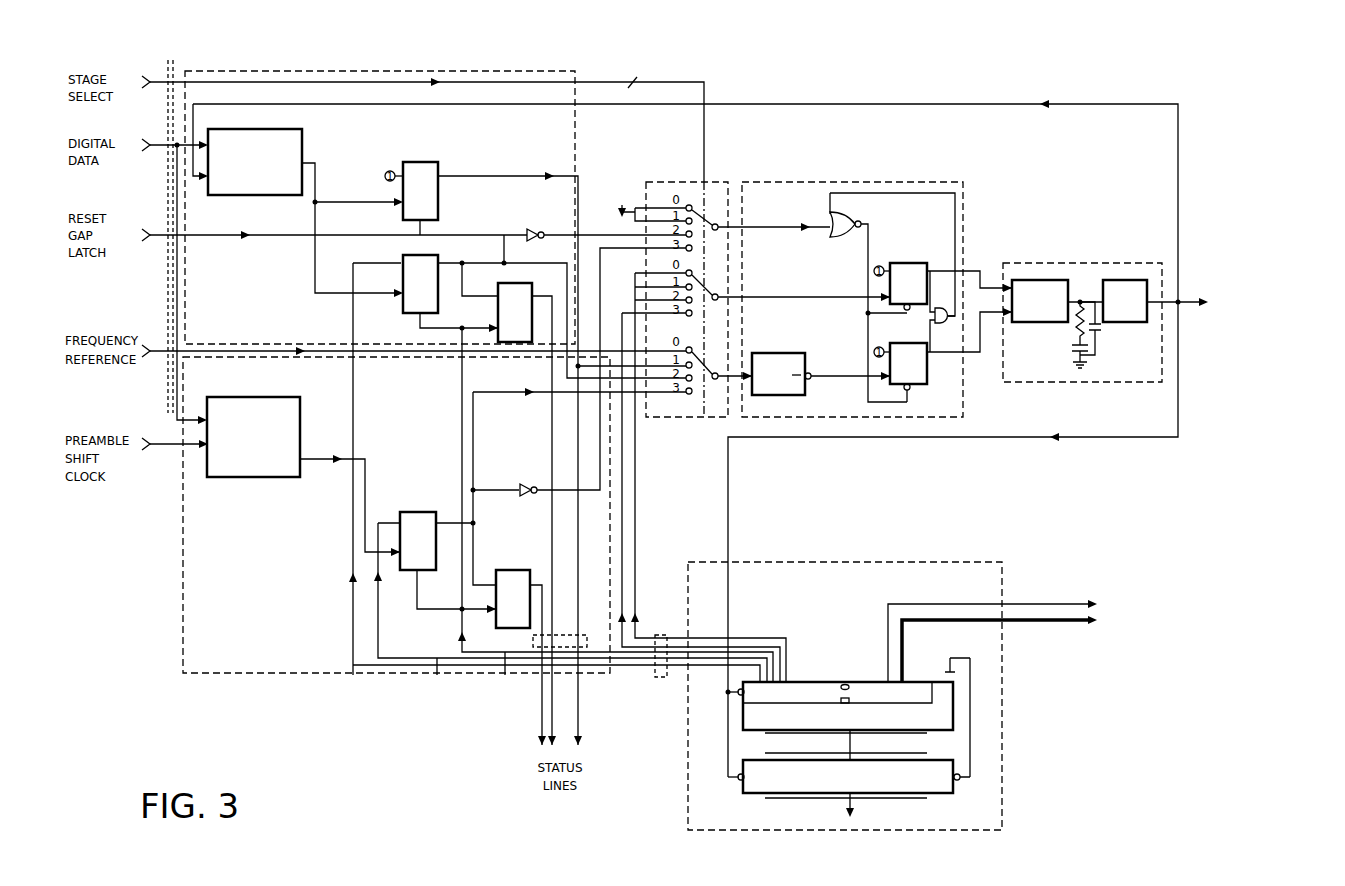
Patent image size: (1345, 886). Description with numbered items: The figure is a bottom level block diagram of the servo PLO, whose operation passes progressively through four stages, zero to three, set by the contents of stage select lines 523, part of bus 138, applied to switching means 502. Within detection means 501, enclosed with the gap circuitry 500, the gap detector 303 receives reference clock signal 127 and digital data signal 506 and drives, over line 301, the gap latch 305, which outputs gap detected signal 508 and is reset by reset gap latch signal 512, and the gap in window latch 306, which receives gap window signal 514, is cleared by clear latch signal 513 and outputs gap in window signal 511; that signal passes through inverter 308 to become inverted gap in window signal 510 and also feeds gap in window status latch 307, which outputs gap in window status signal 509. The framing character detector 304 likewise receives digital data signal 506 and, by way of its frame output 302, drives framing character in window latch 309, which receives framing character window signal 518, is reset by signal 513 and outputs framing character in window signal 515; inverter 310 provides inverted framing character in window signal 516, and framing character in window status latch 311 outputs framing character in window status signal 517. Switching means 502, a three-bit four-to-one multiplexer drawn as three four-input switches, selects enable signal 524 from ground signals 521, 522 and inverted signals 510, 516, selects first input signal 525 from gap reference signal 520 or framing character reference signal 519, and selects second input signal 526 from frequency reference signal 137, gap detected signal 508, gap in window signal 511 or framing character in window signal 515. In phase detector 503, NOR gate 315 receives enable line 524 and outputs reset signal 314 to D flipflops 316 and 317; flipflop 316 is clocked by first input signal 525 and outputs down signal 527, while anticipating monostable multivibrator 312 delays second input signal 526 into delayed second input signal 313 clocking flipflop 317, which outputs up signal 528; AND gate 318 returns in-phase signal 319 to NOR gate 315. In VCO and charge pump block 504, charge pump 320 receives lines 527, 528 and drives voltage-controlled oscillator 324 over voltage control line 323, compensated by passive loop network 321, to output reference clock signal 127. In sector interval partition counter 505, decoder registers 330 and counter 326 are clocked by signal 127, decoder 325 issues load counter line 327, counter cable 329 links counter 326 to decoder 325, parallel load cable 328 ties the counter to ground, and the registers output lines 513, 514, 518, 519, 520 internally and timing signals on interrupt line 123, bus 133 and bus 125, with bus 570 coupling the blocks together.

The stage select lines 523 is at (158, 78).
The bus 138 is at (172, 66).
The gap detection circuit 500 is at (462, 68).
The digital data signal 506 is at (157, 140).
The gap detector 303 is at (262, 128).
The line 301 is at (320, 178).
The reset gap latch signal 512 is at (150, 232).
The gap latch 305 is at (440, 200).
The gap detected signal 508 is at (519, 172).
The ground signal 521 is at (638, 205).
The ground signal 522 is at (634, 222).
The switching means 502 is at (684, 420).
The phase detector 503 is at (898, 180).
The enable signal 524 is at (788, 230).
The NOR gate 315 is at (848, 212).
The in-phase signal 319 is at (958, 230).
The D flipflop 316 is at (909, 262).
The D flipflop 317 is at (915, 392).
The AND gate 318 is at (936, 320).
The reset signal 314 is at (866, 316).
The first input signal 525 is at (836, 295).
The anticipating monostable multivibrator 312 is at (771, 352).
The delayed second input signal 313 is at (850, 361).
The second input signal 526 is at (733, 378).
The down signal 527 is at (990, 290).
The up signal 528 is at (994, 318).
The charge pump 320 is at (1038, 323).
The voltage-controlled oscillator 324 is at (1131, 323).
The voltage control line 323 is at (1081, 292).
The passive loop network 321 is at (1101, 340).
The VCO and charge pump block 504 is at (1063, 384).
The reference clock signal 127 is at (1197, 308).
The frequency reference signal 137 is at (155, 346).
The gap in window latch 306 is at (403, 311).
The gap in window status latch 307 is at (497, 318).
The gap in window signal 511 is at (503, 261).
The inverted gap in window signal 510 is at (556, 232).
The inverter 308 is at (530, 228).
The framing character detector 304 is at (248, 478).
The frame signal line 302 is at (325, 462).
The framing character in window latch 309 is at (405, 573).
The framing character in window status latch 311 is at (492, 630).
The framing character in window signal 515 is at (504, 391).
The inverter 310 is at (521, 482).
The inverted framing character in window signal 516 is at (599, 413).
The framing character reference signal 519 is at (618, 441).
The gap reference signal 520 is at (634, 524).
The gap in window status signal 509 is at (553, 530).
The framing character in window status signal 517 is at (542, 580).
The detection means 501 is at (181, 613).
The bus 125 is at (585, 634).
The bus 570 is at (664, 634).
The interrupt signal 123 is at (946, 603).
The bus 133 is at (1057, 623).
The load counter line 327 is at (957, 657).
The decoder registers 330 is at (820, 681).
The decoder 325 is at (742, 726).
The counter 326 is at (742, 787).
The counter cable 329 is at (847, 740).
The parallel load cable 328 is at (845, 815).
The sector interval partition counter 505 is at (946, 832).
The gap window signal 514 is at (355, 716).
The framing character window signal 518 is at (436, 716).
The clear latch signal 513 is at (505, 716).